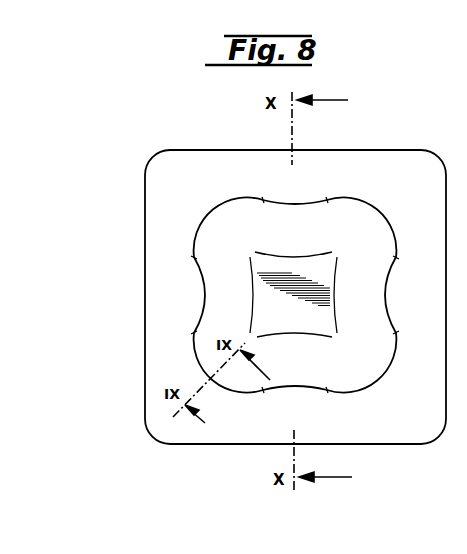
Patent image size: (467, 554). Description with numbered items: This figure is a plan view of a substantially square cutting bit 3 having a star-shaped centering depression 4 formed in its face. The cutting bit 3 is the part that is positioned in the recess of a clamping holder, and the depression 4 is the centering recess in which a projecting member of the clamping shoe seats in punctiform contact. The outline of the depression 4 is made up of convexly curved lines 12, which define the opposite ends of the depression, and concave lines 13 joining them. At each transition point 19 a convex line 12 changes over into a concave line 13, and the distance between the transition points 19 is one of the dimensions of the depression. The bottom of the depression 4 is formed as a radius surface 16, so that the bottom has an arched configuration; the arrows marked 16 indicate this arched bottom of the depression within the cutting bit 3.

The cutting bit 3 is at (175, 456).
The depression 4 is at (303, 318).
The convexly curved lines 12 is at (216, 211).
The concave lines 13 is at (295, 207).
The radius surface 16 is at (333, 216).
The transition point 19 is at (262, 198).